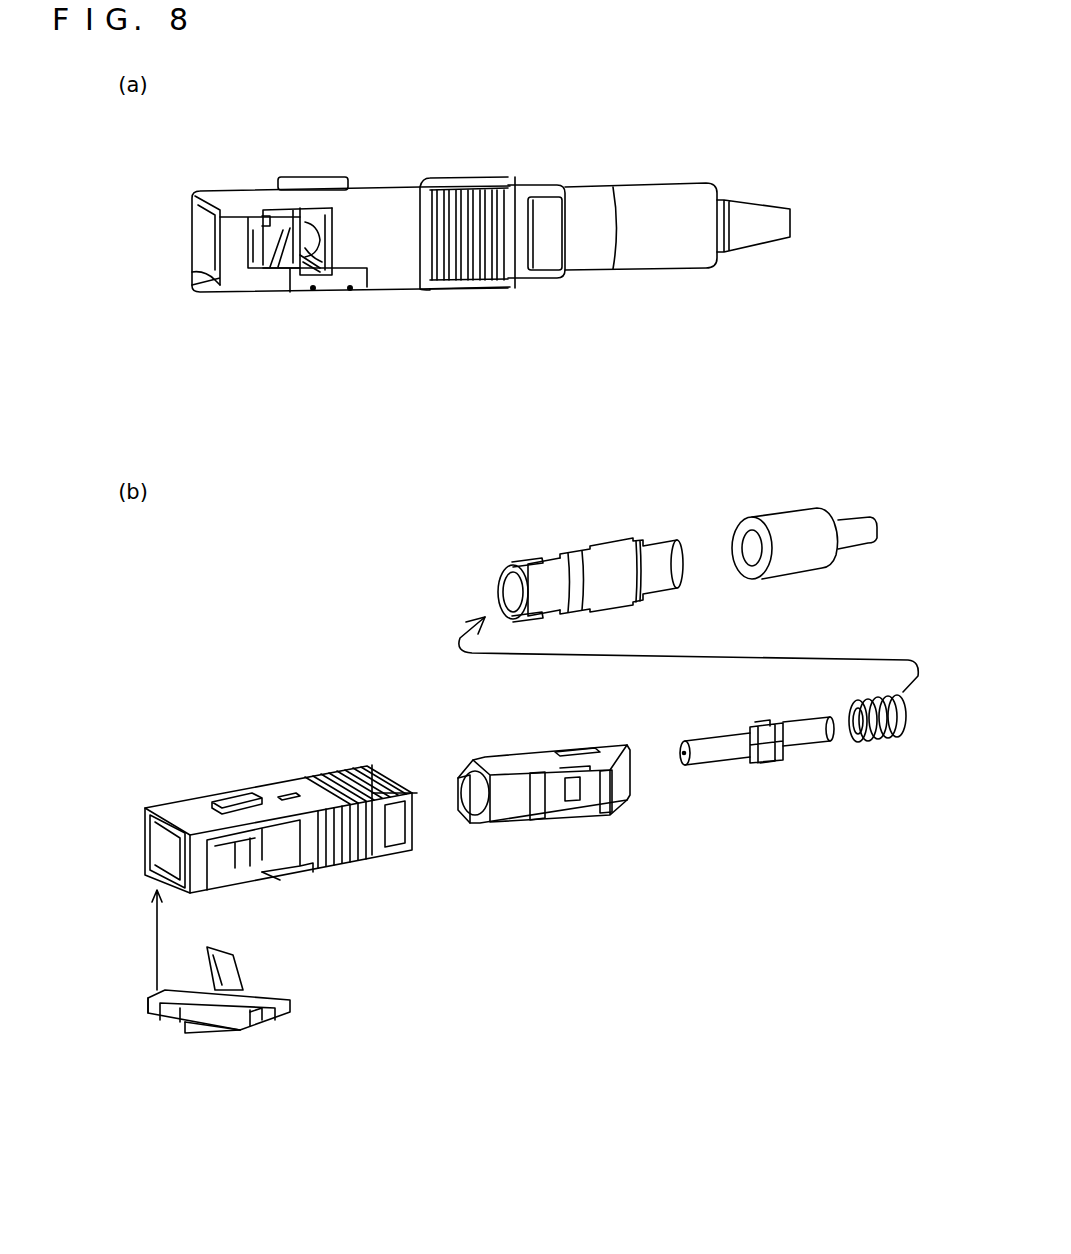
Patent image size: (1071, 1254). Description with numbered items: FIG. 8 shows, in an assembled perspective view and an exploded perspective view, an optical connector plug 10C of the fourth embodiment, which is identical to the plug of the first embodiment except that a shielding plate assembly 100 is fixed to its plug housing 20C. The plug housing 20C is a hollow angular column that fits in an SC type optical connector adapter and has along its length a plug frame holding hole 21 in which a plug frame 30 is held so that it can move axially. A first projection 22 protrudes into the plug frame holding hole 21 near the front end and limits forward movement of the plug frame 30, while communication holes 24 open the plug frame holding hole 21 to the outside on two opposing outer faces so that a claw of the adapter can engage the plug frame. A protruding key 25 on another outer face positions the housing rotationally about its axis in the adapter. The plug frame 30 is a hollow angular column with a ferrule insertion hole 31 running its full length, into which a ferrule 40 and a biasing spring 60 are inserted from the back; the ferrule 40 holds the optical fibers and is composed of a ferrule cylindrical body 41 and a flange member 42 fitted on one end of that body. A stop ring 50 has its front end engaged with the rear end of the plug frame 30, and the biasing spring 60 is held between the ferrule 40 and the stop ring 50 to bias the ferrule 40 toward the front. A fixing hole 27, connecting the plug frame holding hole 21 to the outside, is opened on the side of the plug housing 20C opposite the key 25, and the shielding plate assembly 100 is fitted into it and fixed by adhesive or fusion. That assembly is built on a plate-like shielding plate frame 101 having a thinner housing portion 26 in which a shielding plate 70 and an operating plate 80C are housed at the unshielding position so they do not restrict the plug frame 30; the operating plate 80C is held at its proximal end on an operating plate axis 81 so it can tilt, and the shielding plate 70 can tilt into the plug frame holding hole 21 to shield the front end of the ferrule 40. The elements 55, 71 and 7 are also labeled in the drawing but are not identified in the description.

The optical connector plug 10C is at (803, 167).
The plug housing 20C is at (372, 250).
The plug frame holding hole 21 is at (200, 218).
The first projection 22 is at (237, 232).
The communication holes 24 is at (262, 223).
The protruding key 25 is at (327, 172).
The housing portion 26 is at (198, 272).
The fixing hole 27 is at (270, 880).
The engagement portion 7 is at (265, 992).
The plug frame 30 is at (518, 757).
The ferrule insertion hole 31 is at (475, 812).
The ferrule 40 is at (742, 806).
The ferrule cylindrical body 41 is at (320, 237).
The flange member 42 is at (790, 745).
The stop ring 50 is at (588, 252).
The boot 55 is at (642, 248).
The biasing spring 60 is at (897, 737).
The shielding plate 70 is at (283, 230).
The pivot 71 is at (313, 290).
The operating plate 80C is at (308, 273).
The operating plate axis 81 is at (350, 290).
The shielding plate assembly 100 is at (232, 290).
The shielding plate frame 101 is at (213, 1027).